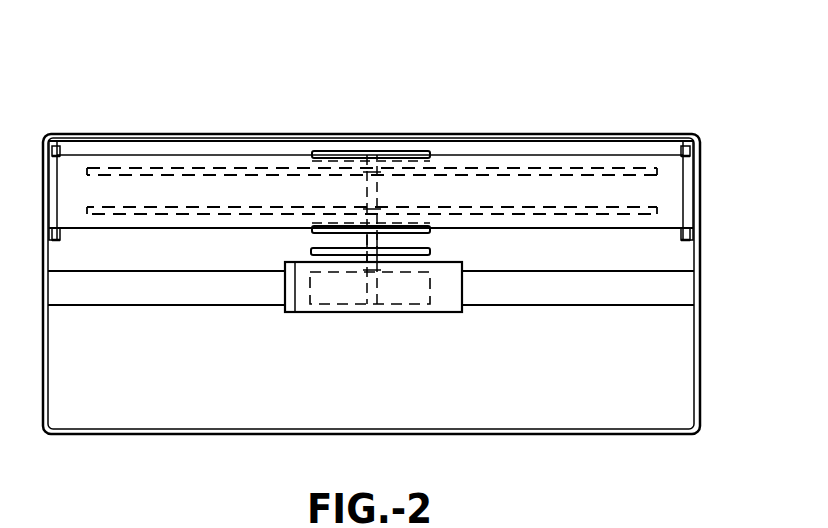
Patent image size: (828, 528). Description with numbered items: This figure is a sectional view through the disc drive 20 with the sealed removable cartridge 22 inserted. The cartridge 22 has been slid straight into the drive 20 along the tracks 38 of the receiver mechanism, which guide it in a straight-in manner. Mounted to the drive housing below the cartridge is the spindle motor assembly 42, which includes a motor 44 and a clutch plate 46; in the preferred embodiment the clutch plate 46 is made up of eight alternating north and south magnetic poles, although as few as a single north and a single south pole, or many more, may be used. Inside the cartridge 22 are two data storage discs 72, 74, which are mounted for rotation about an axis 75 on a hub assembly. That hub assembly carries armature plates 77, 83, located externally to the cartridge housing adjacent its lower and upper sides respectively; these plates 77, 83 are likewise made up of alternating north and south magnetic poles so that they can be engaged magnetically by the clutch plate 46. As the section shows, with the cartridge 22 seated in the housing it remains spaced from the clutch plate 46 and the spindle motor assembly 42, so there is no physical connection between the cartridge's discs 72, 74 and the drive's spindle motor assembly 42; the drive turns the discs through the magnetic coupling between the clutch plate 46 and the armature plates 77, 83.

The disc drive 20 is at (563, 135).
The sealed removable cartridge 22 is at (652, 230).
The tracks 38 is at (60, 232).
The spindle motor assembly 42 is at (438, 314).
The motor 44 is at (455, 262).
The clutch plate 46 is at (310, 250).
The data storage disc 72 is at (198, 170).
The data storage disc 74 is at (257, 210).
The axis 75 is at (382, 190).
The armature plate 77 is at (311, 231).
The armature plate 83 is at (402, 151).